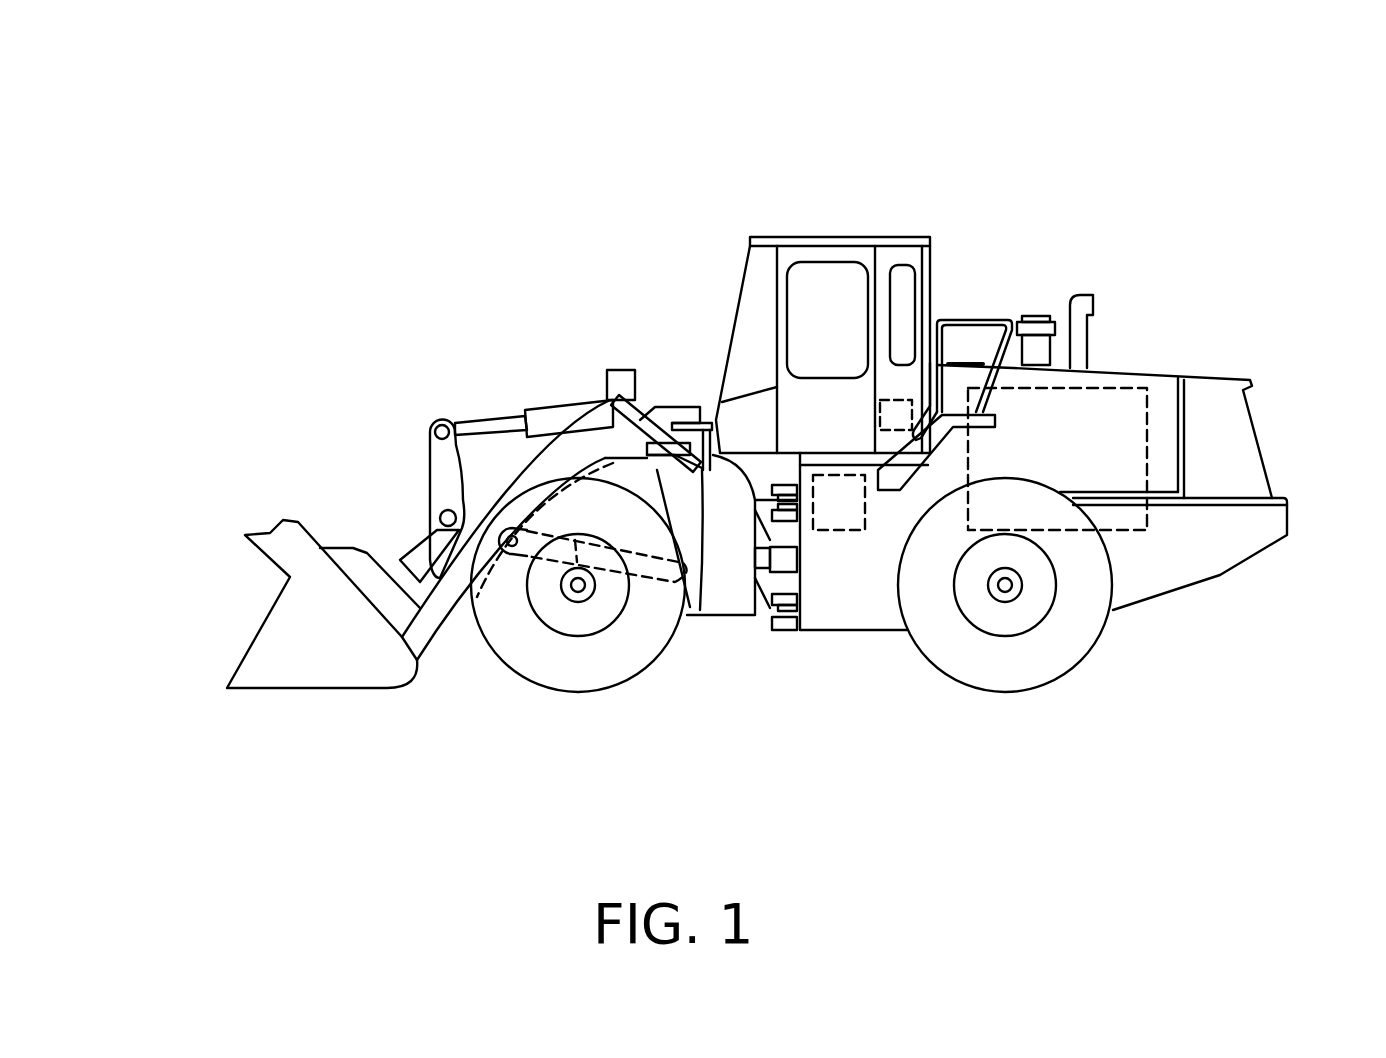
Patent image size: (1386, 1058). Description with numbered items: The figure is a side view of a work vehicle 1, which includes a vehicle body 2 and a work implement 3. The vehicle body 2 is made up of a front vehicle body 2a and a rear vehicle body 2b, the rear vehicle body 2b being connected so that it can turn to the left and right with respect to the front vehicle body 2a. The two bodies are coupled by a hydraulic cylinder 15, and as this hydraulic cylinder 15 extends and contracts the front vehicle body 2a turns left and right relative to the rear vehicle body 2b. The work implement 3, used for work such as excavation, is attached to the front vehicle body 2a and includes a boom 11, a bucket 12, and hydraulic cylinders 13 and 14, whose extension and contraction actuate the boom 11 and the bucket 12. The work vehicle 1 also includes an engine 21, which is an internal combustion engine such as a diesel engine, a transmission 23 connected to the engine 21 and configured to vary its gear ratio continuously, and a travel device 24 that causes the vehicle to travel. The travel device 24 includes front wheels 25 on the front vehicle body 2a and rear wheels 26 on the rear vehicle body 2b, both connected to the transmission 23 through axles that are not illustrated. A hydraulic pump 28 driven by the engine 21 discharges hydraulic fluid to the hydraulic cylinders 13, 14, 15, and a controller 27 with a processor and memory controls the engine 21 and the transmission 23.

The work vehicle 1 is at (1070, 143).
The vehicle body 2 is at (833, 745).
The front vehicle body 2a is at (733, 608).
The rear vehicle body 2b is at (813, 628).
The work implement 3 is at (269, 506).
The boom 11 is at (483, 518).
The bucket 12 is at (286, 617).
The hydraulic cylinder 13 is at (527, 548).
The hydraulic cylinder 14 is at (540, 412).
The hydraulic cylinder 15 is at (787, 556).
The engine 21 is at (1128, 385).
The transmission 23 is at (943, 612).
The travel device 24 is at (1108, 652).
The front wheels 25 is at (591, 672).
The rear wheels 26 is at (1017, 672).
The controller 27 is at (898, 395).
The hydraulic pump 28 is at (842, 470).